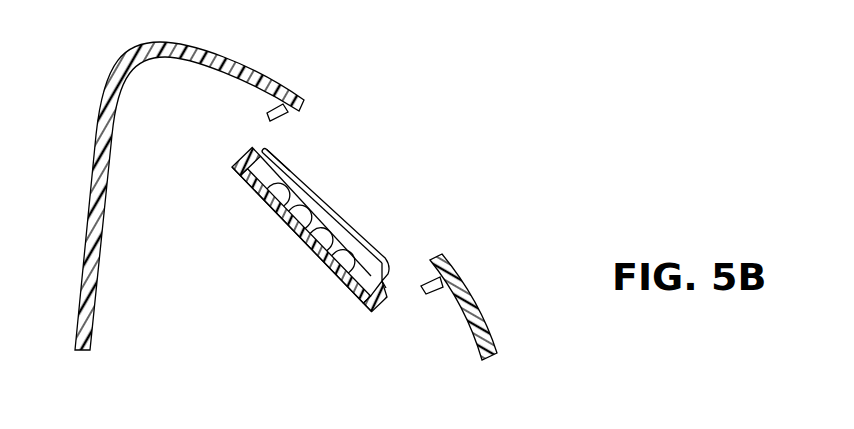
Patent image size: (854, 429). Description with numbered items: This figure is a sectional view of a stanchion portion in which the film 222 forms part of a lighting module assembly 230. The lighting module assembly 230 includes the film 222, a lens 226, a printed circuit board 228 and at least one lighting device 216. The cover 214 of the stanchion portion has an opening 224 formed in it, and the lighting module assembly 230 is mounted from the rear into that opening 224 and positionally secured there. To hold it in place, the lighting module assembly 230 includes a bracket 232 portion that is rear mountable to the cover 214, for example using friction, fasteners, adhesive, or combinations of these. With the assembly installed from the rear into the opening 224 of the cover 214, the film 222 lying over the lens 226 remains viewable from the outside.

The cover 214 is at (243, 59).
The lighting device 216 is at (282, 173).
The film 222 is at (338, 201).
The opening 224 is at (433, 257).
The lens 226 is at (304, 182).
The printed circuit board 228 is at (382, 279).
The lighting module assembly 230 is at (325, 236).
The bracket 232 is at (338, 284).